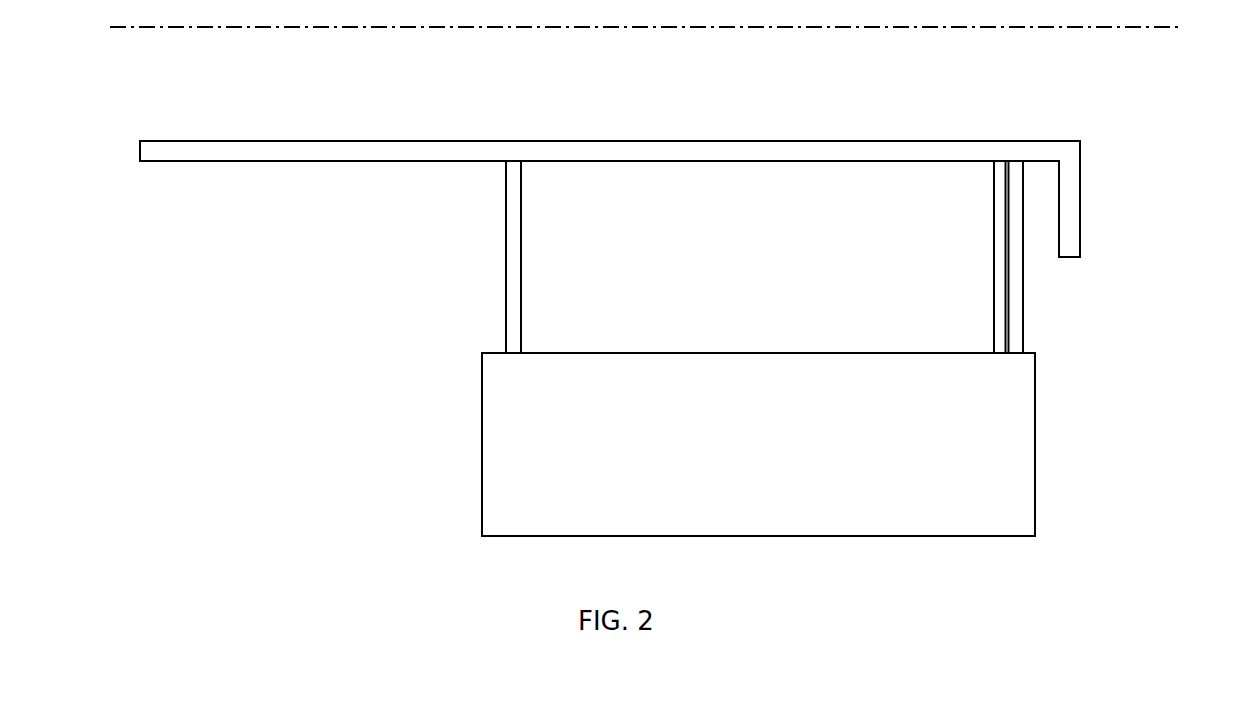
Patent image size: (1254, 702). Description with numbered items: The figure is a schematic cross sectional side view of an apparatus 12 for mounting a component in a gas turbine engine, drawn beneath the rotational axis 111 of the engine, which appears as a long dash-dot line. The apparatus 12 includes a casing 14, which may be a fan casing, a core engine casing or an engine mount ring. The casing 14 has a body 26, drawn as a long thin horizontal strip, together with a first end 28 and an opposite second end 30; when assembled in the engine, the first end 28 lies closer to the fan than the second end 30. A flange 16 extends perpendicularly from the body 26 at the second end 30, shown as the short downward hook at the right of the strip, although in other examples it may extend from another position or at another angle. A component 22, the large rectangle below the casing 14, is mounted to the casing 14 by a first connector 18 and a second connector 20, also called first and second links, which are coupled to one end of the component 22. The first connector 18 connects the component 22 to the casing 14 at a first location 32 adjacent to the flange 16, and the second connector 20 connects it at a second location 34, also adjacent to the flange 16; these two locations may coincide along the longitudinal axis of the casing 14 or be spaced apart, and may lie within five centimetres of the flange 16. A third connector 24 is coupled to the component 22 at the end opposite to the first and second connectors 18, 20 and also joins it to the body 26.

The apparatus 12 is at (255, 410).
The casing 14 is at (462, 152).
The flange 16 is at (1070, 193).
The first connector 18 is at (1018, 286).
The second connector 20 is at (999, 311).
The component 22 is at (873, 520).
The third connector 24 is at (513, 237).
The body 26 is at (628, 140).
The first end 28 is at (142, 236).
The second end 30 is at (1110, 391).
The first location 32 is at (1019, 156).
The second location 34 is at (997, 156).
The rotational axis 111 is at (1128, 30).